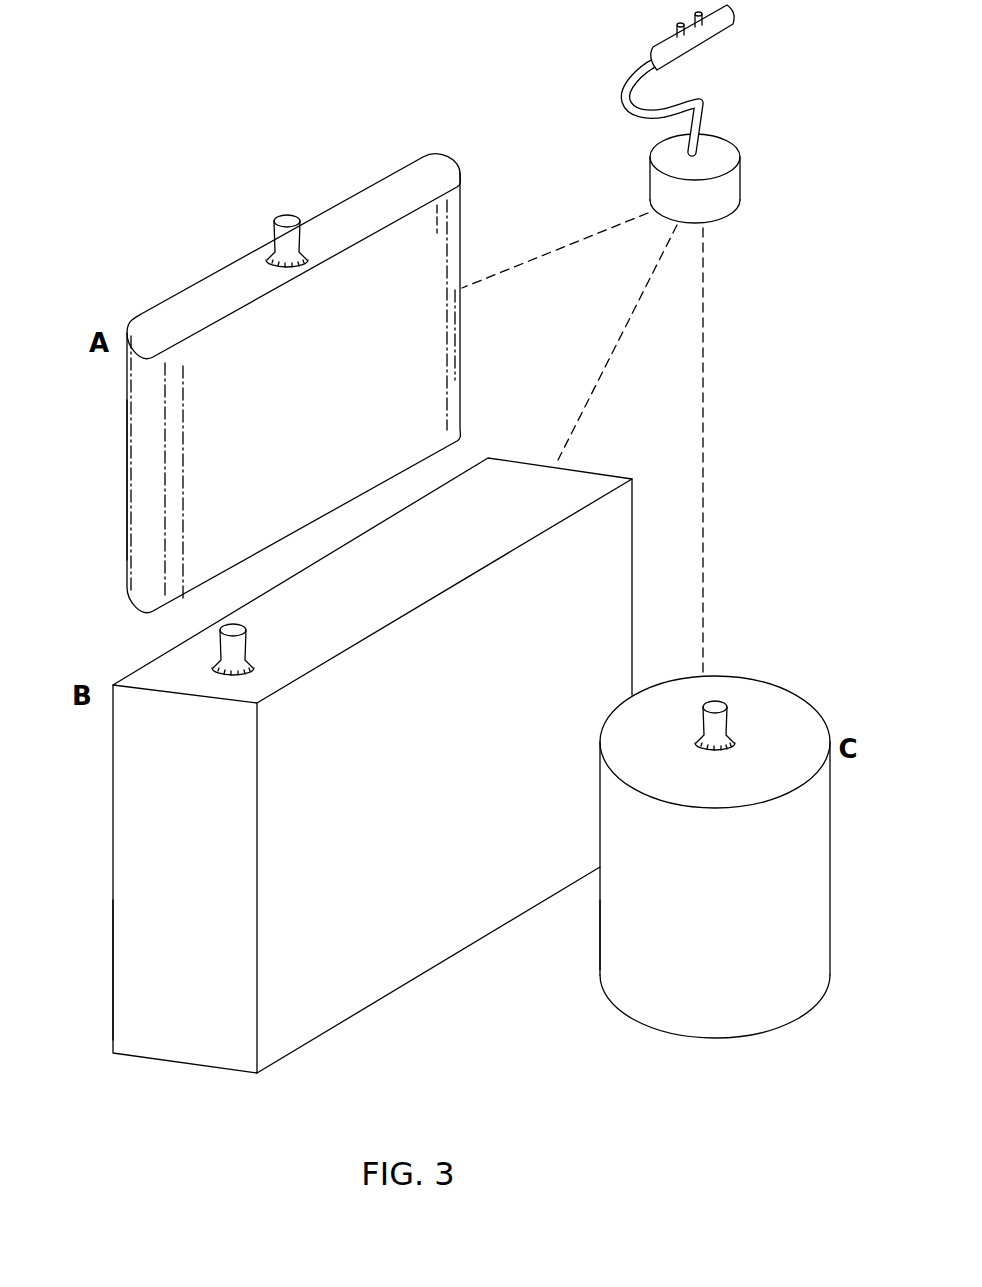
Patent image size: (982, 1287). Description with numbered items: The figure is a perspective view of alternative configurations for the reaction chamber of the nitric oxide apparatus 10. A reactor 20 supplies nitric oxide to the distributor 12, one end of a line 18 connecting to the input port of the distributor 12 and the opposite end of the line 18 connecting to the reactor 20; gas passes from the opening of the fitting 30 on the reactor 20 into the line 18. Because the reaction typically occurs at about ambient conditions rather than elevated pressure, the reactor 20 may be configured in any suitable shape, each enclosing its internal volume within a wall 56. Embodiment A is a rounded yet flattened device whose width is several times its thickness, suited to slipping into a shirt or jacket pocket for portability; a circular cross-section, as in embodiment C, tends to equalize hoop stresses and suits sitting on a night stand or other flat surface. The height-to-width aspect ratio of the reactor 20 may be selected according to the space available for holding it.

The apparatus 10 is at (446, 538).
The distributor 12 is at (731, 13).
The line 18 is at (703, 108).
The reactor 20 is at (446, 603).
The fitting 30 is at (283, 233).
The wall 56 is at (137, 510).